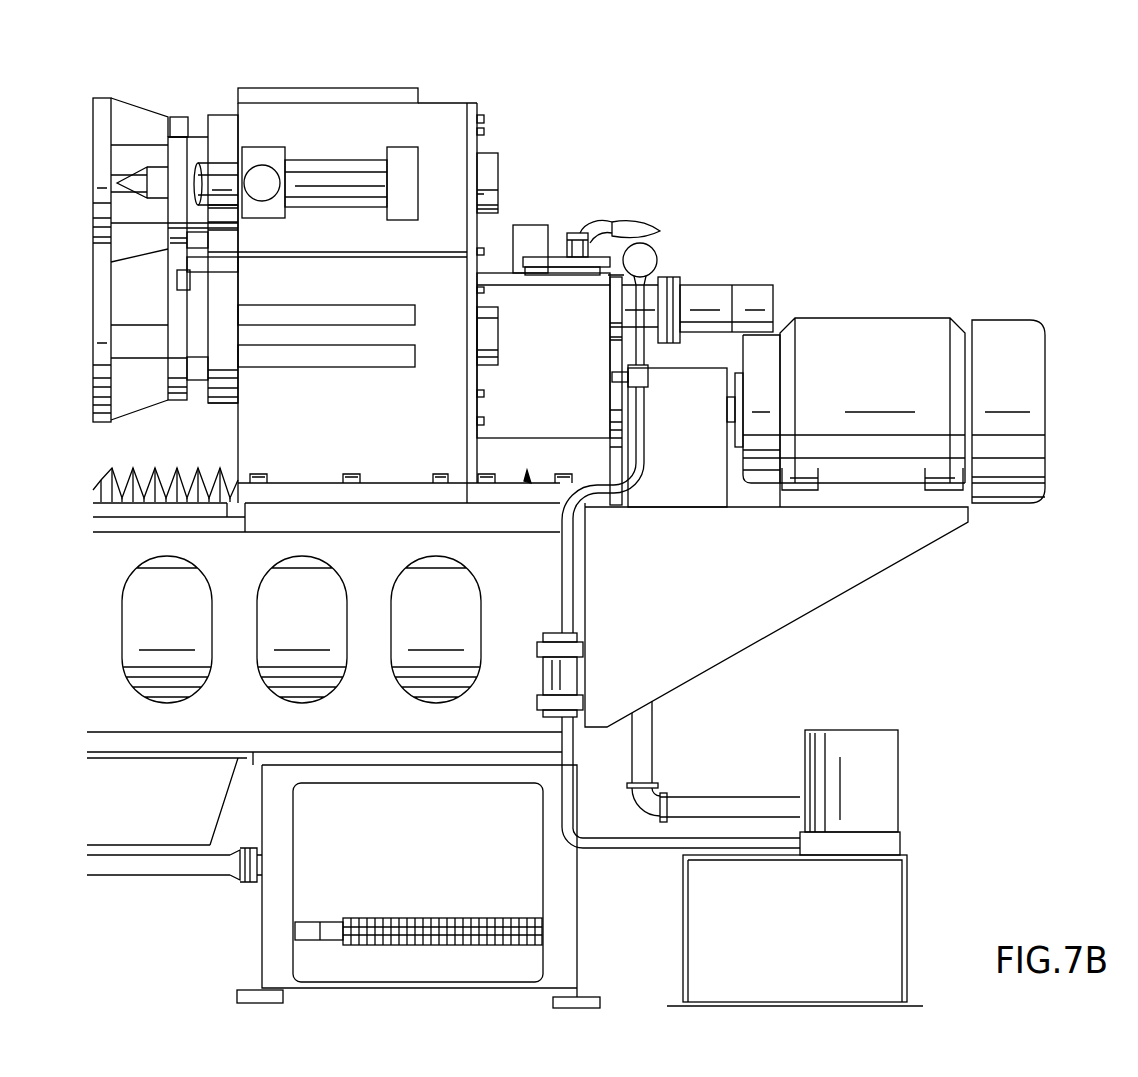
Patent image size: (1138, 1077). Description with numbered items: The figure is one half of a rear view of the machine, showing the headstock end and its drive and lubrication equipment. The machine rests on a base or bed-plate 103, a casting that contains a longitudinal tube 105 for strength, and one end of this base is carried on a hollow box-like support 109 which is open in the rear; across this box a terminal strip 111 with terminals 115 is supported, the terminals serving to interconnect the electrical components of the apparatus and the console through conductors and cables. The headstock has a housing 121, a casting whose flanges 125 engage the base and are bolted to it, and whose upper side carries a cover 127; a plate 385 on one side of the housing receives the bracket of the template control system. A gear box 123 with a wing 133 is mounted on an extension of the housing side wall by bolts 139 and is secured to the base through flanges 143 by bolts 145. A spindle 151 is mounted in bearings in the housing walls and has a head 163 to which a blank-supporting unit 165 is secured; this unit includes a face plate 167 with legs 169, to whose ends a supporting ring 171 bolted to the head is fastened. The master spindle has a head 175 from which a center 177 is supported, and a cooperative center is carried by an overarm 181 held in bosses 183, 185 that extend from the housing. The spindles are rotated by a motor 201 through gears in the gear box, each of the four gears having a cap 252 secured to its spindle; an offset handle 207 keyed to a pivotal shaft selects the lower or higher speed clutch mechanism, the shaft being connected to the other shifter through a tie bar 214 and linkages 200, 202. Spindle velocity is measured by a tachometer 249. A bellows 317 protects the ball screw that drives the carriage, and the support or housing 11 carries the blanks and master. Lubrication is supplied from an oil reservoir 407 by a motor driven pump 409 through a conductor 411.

The support or housing 11 is at (316, 245).
The base or bed-plate 103 is at (198, 732).
The longitudinal tube 105 is at (412, 592).
The hollow box-like support 109 is at (578, 898).
The terminal strips 111 is at (433, 920).
The terminals 115 is at (491, 918).
The housing 121 is at (325, 470).
The gear box 123 is at (538, 490).
The flanges 125 is at (395, 490).
The cover 127 is at (481, 135).
The wing 133 is at (485, 419).
The bolts 139 is at (485, 393).
The flanges 143 is at (475, 495).
The bolts 145 is at (558, 474).
The spindle 151 is at (223, 403).
The head 163 is at (200, 283).
The blank-supporting unit 165 is at (172, 402).
The face plate 167 is at (105, 98).
The legs 169 is at (150, 328).
The supporting ring 171 is at (180, 117).
The head 175 is at (208, 238).
The center 177 is at (162, 168).
The overarm 181 is at (352, 160).
The boss 183 is at (405, 147).
The boss 185 is at (257, 147).
The linkage 200 is at (607, 283).
The motor 201 is at (878, 318).
The linkage 202 is at (550, 276).
The offset handle 207 is at (630, 230).
The tie bar 214 is at (555, 260).
The tachometer 249 is at (750, 285).
The cap 252 is at (500, 180).
The bellows 317 is at (143, 470).
The plate 385 is at (353, 305).
The oil reservoir 407 is at (878, 925).
The motor driven pump 409 is at (898, 775).
The conductor 411 is at (573, 572).